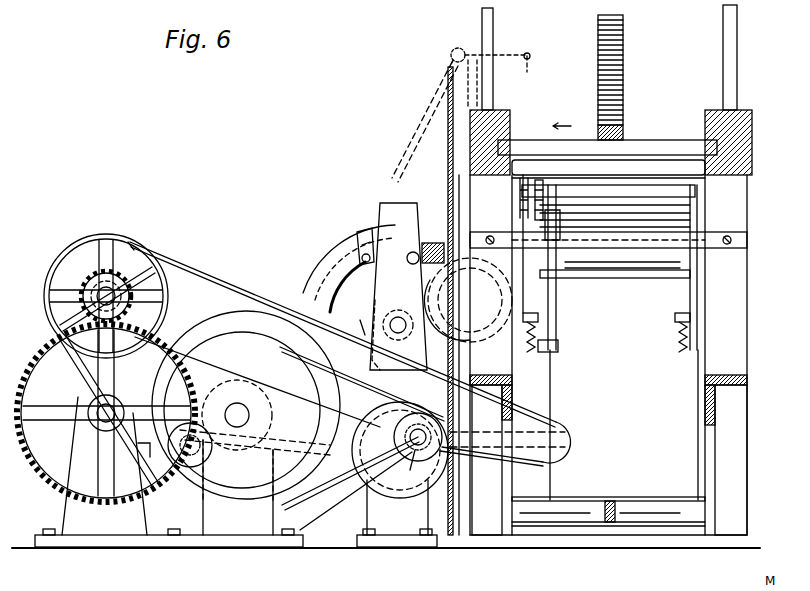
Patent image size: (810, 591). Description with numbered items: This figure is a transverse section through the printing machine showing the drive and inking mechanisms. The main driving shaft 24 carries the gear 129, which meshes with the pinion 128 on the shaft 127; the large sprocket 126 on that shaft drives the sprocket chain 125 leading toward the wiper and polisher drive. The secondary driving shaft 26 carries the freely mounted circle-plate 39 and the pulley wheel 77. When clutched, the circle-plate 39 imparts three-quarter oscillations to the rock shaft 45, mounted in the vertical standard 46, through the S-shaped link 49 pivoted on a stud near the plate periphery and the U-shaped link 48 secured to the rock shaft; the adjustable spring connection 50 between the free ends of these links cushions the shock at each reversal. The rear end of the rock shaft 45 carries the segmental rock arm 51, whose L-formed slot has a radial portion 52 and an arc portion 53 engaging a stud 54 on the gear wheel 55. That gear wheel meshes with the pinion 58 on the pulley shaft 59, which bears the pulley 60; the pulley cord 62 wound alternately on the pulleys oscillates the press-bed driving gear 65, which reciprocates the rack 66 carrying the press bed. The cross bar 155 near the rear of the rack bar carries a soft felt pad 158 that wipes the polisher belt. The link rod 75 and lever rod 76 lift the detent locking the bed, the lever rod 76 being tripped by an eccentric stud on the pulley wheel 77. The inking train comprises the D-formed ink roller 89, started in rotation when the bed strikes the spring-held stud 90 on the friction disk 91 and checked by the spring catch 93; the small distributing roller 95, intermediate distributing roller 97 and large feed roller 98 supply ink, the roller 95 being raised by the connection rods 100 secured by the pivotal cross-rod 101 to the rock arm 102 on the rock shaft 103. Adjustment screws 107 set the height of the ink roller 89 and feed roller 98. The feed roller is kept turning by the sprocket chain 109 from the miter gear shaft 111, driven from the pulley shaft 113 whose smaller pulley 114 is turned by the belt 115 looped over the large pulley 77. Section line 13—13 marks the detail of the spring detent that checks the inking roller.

The section line 13— 13 is at (556, 316).
The main driving shaft 24 is at (100, 418).
The secondary driving shaft 26 is at (237, 428).
The circle-plate 39 is at (208, 315).
The rock shaft 45 is at (398, 316).
The vertical standard 46 is at (390, 203).
The U-shaped link 48 is at (490, 285).
The S-shaped link 49 is at (359, 318).
The adjustable spring connection 50 is at (430, 240).
The segmental rock arm 51 is at (305, 285).
The radial portion 52 is at (362, 232).
The arc portion 53 is at (330, 285).
The stud 54 is at (360, 260).
The gear wheel 55 is at (300, 356).
The pinion 58 is at (400, 498).
The pulley shaft 59 is at (408, 442).
The pulley 60 is at (430, 455).
The vertical rod 62 is at (448, 85).
The press-bed driving gear 65 is at (623, 50).
The rack 66 is at (625, 130).
The link rod 75 is at (533, 68).
The lever rod 76 is at (400, 138).
The pulley wheel 77 is at (257, 382).
The D-formed ink roller 89 is at (618, 190).
The spring-held stud 90 is at (524, 178).
The friction disk 91 is at (535, 195).
The spring catch 93 is at (552, 185).
The small distributing roller 95 is at (608, 206).
The intermediate distributing roller 97 is at (607, 268).
The large feed roller 98 is at (630, 278).
The connection rods 100 is at (553, 478).
The pivotal cross-rod 101 is at (642, 496).
The rock arm 102 is at (612, 522).
The rock shaft 103 is at (678, 526).
The adjustment screws 107 is at (530, 360).
The sprocket chain 109 is at (560, 347).
The miter gear shaft 111 is at (483, 452).
The pulley shaft 113 is at (414, 450).
The smaller pulley 114 is at (365, 508).
The belt 115 is at (350, 482).
The sprocket chain 125 is at (206, 262).
The large sprocket 126 is at (130, 240).
The shaft 127 is at (100, 290).
The pinion 128 is at (96, 240).
The gear 129 is at (42, 335).
The cross bar 155 is at (607, 150).
The soft felt pad 158 is at (650, 172).